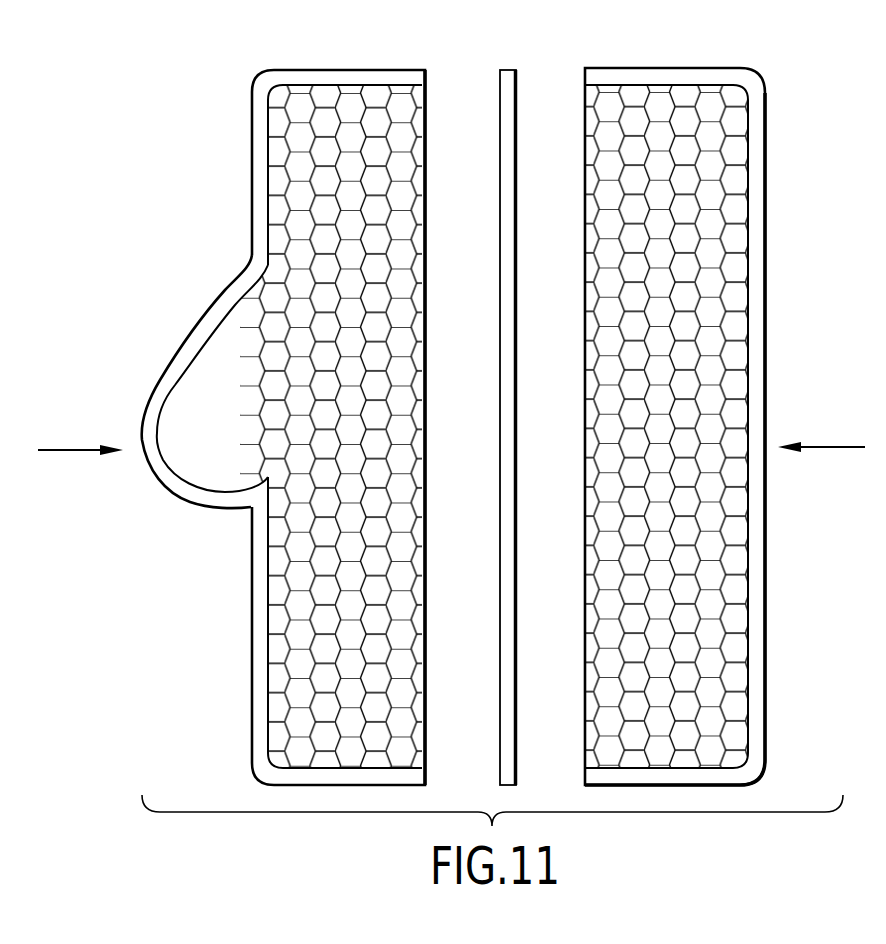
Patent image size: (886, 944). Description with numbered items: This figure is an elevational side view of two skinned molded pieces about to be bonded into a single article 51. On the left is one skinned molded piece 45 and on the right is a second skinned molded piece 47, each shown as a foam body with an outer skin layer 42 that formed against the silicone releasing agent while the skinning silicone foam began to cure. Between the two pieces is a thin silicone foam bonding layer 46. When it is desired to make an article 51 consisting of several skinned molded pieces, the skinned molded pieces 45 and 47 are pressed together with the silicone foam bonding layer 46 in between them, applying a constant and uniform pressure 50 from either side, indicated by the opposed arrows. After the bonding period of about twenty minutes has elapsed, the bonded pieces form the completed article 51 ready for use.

The outer skin layer 42 is at (195, 507).
The skinned molded piece 45 is at (253, 640).
The silicone foam bonding layer 46 is at (508, 66).
The skinned molded piece 47 is at (766, 625).
The constant and uniform pressure 50 is at (78, 450).
The article 51 is at (98, 664).